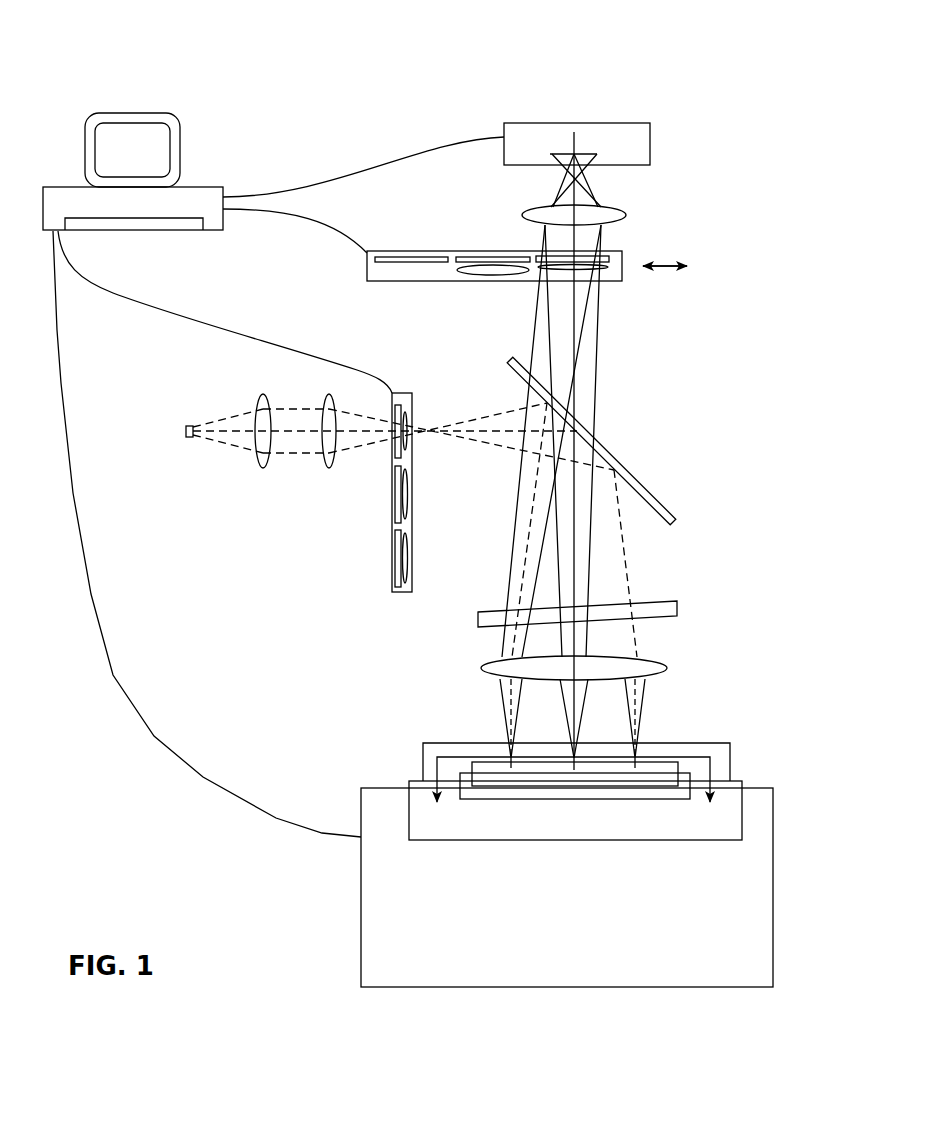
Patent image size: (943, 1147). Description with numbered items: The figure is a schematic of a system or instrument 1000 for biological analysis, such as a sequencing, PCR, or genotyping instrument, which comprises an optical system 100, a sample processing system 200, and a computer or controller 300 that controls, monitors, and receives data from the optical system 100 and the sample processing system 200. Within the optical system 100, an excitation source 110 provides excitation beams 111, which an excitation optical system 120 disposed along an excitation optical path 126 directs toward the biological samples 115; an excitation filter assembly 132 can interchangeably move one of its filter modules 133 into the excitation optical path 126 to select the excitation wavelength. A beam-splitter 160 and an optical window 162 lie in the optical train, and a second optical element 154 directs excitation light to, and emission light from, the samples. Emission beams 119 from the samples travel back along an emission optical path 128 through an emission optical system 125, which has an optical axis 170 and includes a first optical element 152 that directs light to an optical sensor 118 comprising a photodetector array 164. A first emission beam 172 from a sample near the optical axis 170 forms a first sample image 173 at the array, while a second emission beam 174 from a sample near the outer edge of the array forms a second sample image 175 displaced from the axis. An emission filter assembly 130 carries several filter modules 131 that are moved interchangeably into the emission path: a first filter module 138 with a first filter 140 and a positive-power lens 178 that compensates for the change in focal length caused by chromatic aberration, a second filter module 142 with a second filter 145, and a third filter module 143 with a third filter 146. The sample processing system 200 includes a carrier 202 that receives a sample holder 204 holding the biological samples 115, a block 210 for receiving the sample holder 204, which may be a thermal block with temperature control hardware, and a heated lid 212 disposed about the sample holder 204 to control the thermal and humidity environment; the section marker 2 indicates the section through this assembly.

The system or instrument 1000 is at (374, 48).
The optical system 100 is at (805, 253).
The electronic processor, computer, or controller 300 is at (218, 167).
The optical sensor 118 is at (650, 140).
The photodetector array 164 is at (552, 149).
The first sample image 173 is at (573, 151).
The second sample image 175 is at (587, 158).
The first optical element 152 is at (623, 207).
The optical axis 170 is at (575, 569).
The first filter module 138 is at (589, 287).
The excitation optical path 126 is at (507, 436).
The emission filter assembly 130 is at (617, 252).
The filter modules 131 is at (346, 270).
The third filter 146 is at (417, 253).
The second filter 145 is at (493, 253).
The second filter module 142 is at (482, 288).
The third filter module 143 is at (392, 286).
The first filter 140 is at (553, 253).
The lens or optic 178 is at (608, 270).
The illumination or excitation source 110 is at (189, 424).
The excitation beams 111 is at (237, 452).
The excitation optical system 120 is at (284, 519).
The excitation filter assembly 132 is at (406, 392).
The filter modules 133 is at (389, 580).
The emission optical path 128 is at (580, 404).
The beam-splitter 160 is at (663, 503).
The optical windows 162 is at (660, 601).
The first emission beam 172 is at (588, 644).
The second emission beam 174 is at (500, 637).
The second optical element 154 is at (658, 661).
The emission beams 119 is at (496, 718).
The emission optical system 125 is at (682, 687).
The thermally controlled or heated lid 212 is at (731, 746).
The section marker 2 is at (574, 809).
The sample holder 204 is at (510, 787).
The carrier or support frame 202 is at (560, 800).
The block or assembly 210 is at (600, 841).
The biological samples 115 is at (583, 771).
The sample block or processing system 200 is at (342, 893).